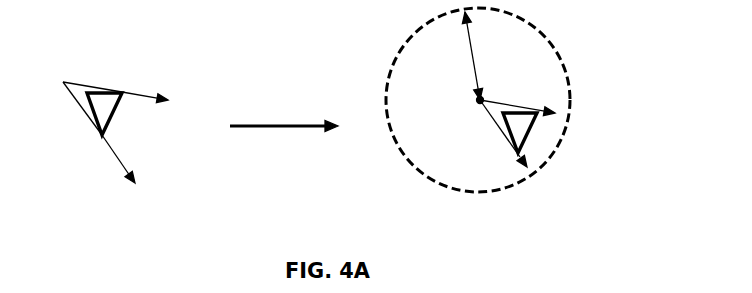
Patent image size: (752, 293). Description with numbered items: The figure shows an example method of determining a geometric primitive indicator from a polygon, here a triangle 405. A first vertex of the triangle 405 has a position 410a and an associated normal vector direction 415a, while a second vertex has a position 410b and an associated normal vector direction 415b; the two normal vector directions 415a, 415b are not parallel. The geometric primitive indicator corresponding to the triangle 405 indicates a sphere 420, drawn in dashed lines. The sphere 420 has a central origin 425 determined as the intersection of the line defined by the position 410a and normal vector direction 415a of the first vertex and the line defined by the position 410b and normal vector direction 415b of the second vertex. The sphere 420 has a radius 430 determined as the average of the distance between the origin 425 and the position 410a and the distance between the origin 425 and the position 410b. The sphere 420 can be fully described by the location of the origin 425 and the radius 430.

The triangle 405 is at (515, 77).
The position of first vertex 410a is at (74, 136).
The position of second vertex 410b is at (92, 63).
The normal vector direction of first vertex 415a is at (131, 170).
The normal vector direction of second vertex 415b is at (165, 100).
The sphere 420 is at (448, 99).
The central origin 425 is at (449, 110).
The radius 430 is at (482, 56).